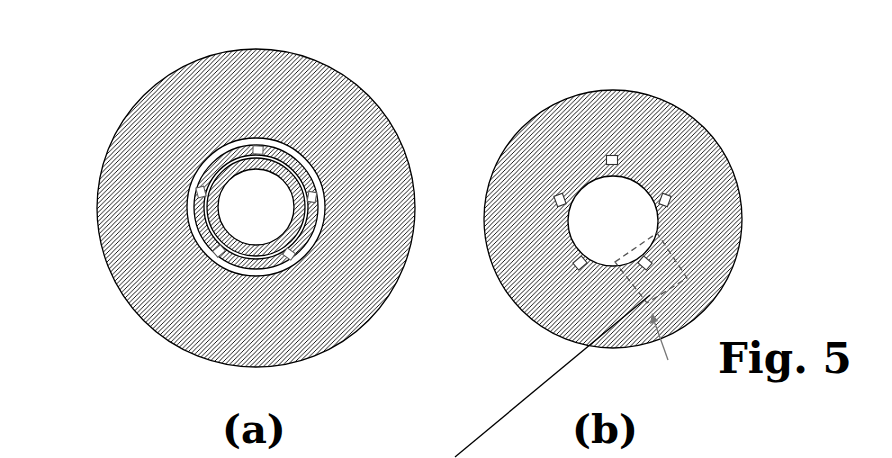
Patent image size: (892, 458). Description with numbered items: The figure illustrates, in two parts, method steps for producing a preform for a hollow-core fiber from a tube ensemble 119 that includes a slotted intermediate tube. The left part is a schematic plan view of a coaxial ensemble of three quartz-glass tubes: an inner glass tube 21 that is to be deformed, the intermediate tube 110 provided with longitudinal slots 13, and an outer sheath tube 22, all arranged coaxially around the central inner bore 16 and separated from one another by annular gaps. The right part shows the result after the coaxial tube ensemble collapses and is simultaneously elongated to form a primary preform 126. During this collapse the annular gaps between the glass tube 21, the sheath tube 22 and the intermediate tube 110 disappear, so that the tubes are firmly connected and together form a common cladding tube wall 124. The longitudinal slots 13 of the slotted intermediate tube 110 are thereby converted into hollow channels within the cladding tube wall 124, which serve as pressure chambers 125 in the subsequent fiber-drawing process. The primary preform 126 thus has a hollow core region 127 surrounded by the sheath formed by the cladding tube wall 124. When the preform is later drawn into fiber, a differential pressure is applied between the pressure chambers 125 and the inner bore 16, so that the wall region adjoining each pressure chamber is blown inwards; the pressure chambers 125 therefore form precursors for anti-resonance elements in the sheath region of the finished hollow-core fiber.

The first ring assembly 119 is at (98, 131).
The longitudinal slots 13 is at (199, 194).
The glass tube to be deformed 21 is at (279, 166).
The inner bore 16 is at (256, 207).
The sheath tube 22 is at (137, 222).
The slotted intermediate tube 110 is at (313, 228).
The primary preform 126 is at (555, 76).
The hollow core region 127 is at (632, 190).
The pressure chambers 125 is at (556, 195).
The cladding tube wall 124 is at (564, 288).